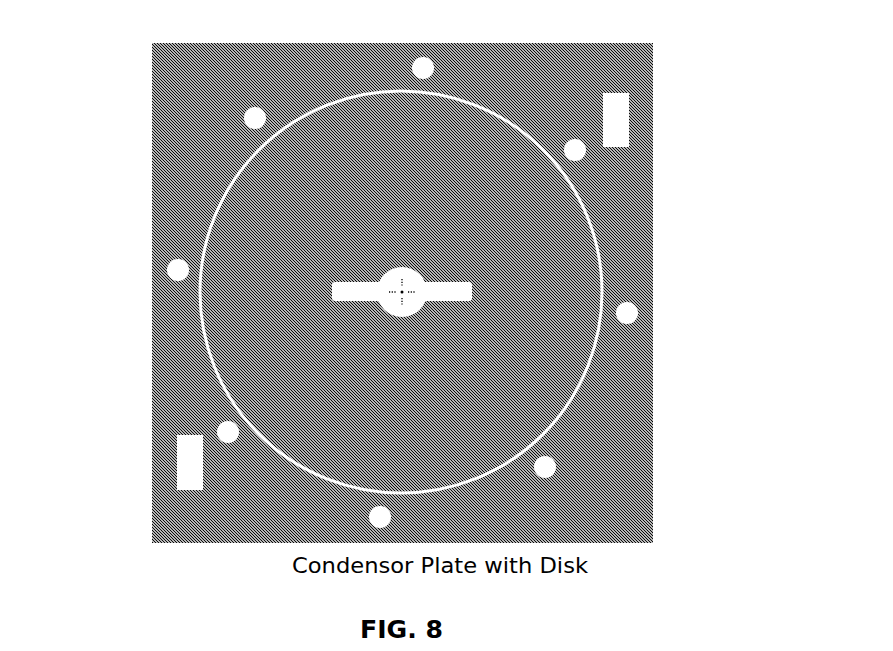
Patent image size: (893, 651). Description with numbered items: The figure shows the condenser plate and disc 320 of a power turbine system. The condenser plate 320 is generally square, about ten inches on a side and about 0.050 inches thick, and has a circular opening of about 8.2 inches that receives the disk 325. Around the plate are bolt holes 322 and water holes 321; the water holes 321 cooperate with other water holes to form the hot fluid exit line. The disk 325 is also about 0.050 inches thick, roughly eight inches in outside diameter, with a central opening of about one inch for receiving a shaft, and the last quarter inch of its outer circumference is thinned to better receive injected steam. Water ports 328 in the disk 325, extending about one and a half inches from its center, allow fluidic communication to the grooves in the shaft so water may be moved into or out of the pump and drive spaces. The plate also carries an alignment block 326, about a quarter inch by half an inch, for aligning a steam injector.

The condenser plate and disc 320 is at (781, 78).
The water holes 321 is at (583, 153).
The bolt holes 322 is at (638, 322).
The disk 325 is at (527, 243).
The alignment block 326 is at (628, 118).
The water ports 328 is at (344, 297).